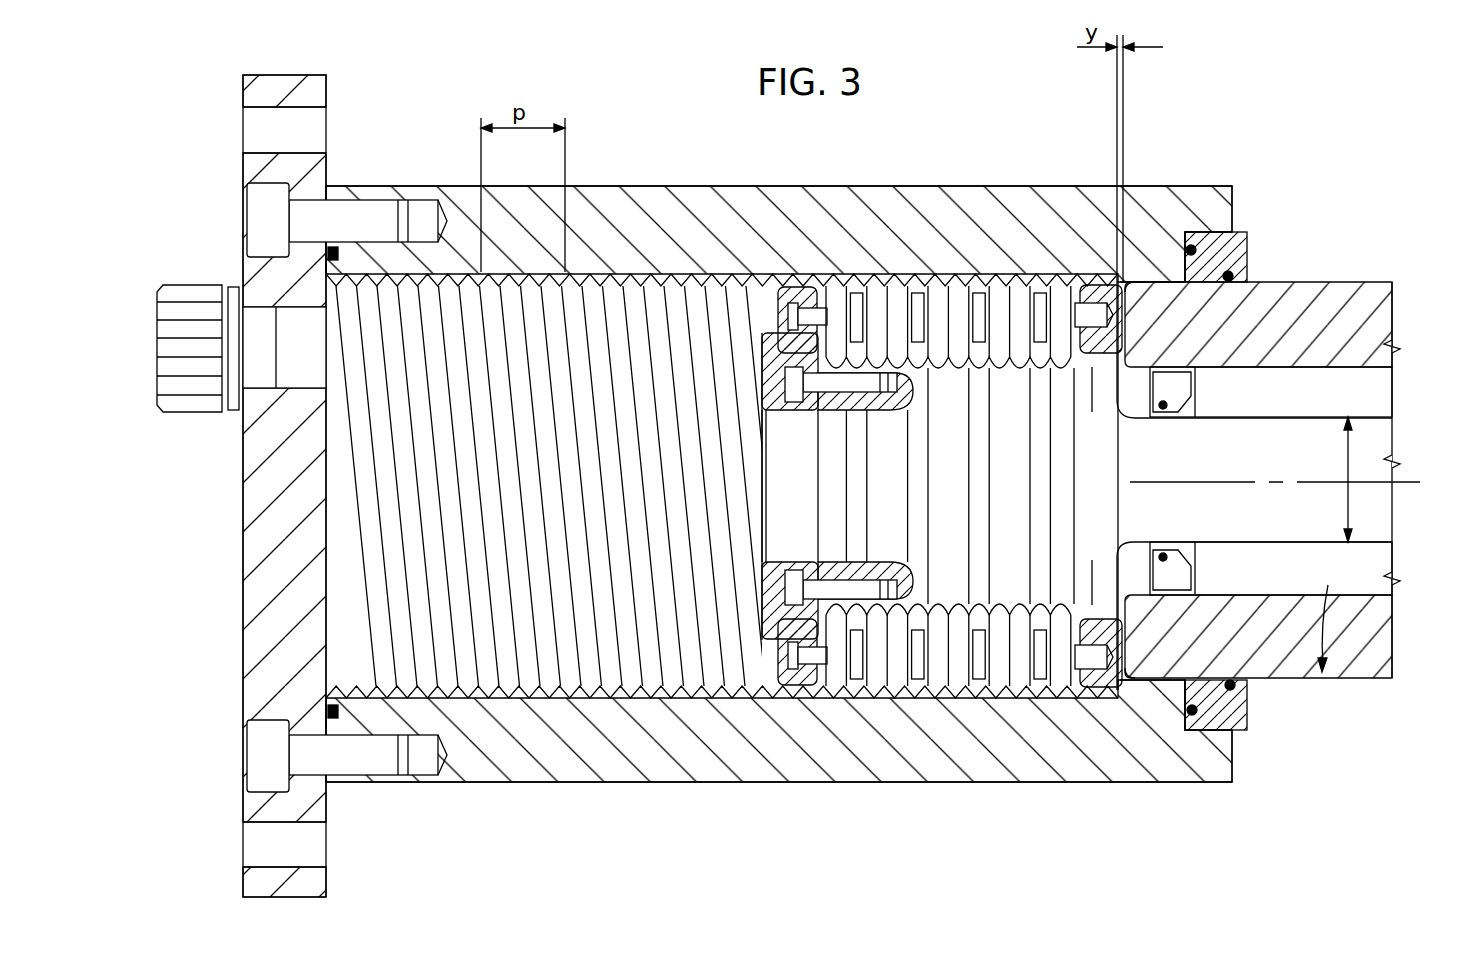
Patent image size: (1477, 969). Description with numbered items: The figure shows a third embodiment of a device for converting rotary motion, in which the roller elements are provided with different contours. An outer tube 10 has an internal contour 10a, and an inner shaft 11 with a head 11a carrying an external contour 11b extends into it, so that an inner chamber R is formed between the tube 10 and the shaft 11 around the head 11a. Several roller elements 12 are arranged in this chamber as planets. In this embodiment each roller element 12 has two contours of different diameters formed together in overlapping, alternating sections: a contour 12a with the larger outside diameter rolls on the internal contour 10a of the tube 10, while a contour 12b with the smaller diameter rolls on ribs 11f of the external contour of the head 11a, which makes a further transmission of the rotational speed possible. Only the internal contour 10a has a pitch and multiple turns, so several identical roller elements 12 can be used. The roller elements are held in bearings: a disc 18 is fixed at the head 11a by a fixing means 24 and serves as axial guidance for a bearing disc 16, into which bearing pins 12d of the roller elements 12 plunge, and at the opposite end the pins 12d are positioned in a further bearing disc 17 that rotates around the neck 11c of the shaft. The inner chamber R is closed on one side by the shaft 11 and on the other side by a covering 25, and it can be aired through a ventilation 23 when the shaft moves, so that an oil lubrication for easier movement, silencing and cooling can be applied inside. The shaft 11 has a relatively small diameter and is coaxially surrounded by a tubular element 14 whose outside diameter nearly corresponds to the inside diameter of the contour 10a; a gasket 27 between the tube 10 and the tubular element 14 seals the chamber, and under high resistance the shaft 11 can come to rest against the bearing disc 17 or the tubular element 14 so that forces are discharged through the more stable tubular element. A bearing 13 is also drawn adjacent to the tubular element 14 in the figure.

The outer tube 10 is at (1058, 186).
The internal contour 10a is at (652, 300).
The inner shaft 11 is at (1375, 447).
The head 11a is at (1012, 575).
The external contour 11b is at (1062, 605).
The neck 11c is at (1095, 435).
The ribs 11f is at (1055, 450).
The roller elements 12 is at (851, 280).
The contour with larger outside diameter 12a is at (940, 285).
The contour with smaller diameter 12b is at (905, 285).
The bearing pins 12d is at (1090, 290).
The bearing 13 is at (1271, 481).
The tubular element 14 is at (1380, 325).
The bearing disc 16 is at (785, 300).
The further bearing disc 17 is at (1150, 250).
The disc 18 is at (798, 508).
The ventilation 23 is at (177, 298).
The fixing means 24 is at (803, 562).
The covering 25 is at (275, 607).
The gasket 27 is at (1240, 232).
The inner chamber R is at (590, 658).